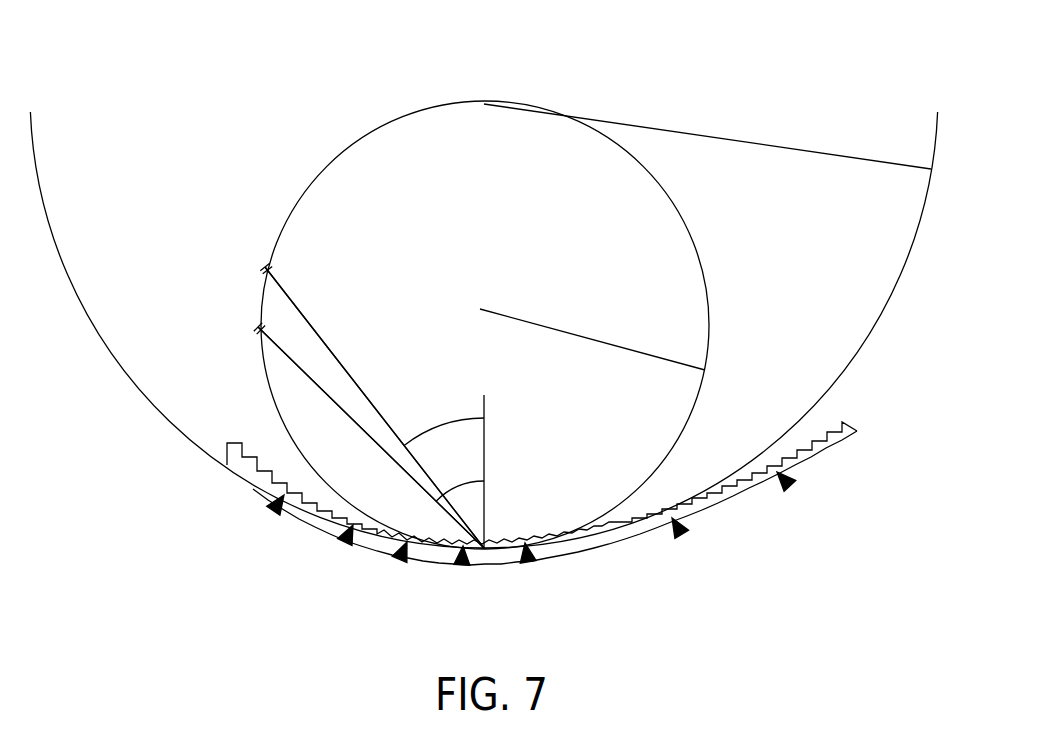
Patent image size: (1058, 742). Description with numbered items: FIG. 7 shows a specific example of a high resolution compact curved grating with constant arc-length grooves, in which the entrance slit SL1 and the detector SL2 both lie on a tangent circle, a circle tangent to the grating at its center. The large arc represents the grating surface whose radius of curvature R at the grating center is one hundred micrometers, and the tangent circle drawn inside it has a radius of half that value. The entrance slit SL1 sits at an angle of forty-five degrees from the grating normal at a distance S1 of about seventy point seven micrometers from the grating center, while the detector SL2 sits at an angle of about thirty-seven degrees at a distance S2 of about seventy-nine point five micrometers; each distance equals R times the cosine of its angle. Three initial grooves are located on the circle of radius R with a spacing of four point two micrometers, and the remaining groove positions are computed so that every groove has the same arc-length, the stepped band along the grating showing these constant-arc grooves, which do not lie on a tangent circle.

The radius of curvature R is at (707, 136).
The entrance slit SL1 is at (340, 424).
The detector SL2 is at (349, 387).
The distance of entrance slit S1 is at (371, 437).
The distance of detector S2 is at (374, 407).